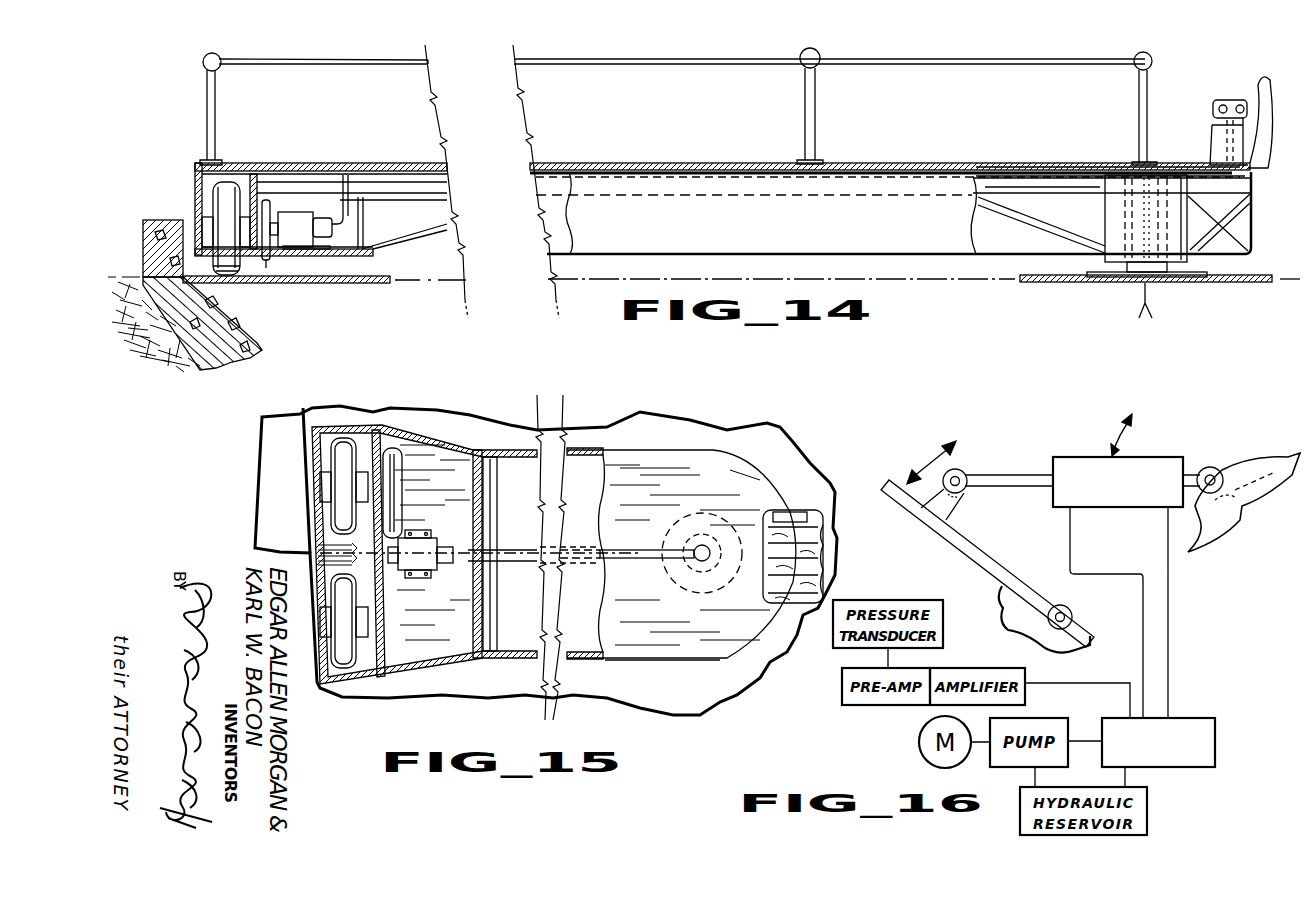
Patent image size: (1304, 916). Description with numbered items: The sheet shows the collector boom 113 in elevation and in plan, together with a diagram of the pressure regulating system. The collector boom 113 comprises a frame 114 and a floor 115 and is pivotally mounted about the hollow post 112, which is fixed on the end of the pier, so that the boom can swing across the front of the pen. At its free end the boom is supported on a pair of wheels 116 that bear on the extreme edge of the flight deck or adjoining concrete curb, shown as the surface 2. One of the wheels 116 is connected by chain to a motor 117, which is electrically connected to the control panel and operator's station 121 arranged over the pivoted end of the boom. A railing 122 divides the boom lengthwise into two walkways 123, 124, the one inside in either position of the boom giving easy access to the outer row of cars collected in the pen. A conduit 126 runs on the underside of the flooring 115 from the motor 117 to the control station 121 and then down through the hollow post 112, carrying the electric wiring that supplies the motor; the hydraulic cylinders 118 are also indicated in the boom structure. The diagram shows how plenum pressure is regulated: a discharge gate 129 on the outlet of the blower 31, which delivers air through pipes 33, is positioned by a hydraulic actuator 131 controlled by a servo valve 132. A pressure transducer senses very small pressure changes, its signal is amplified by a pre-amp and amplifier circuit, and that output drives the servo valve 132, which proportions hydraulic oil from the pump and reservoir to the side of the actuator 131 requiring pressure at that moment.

In FIG. 14, the floor / ground surface 2 is at (318, 284).
In FIG. 16, the blower 31 is at (1242, 474).
In FIG. 16, the pipes 33 is at (1020, 617).
In FIG. 14, the hollow post 112 is at (1133, 268).
In FIG. 15, the hollow post 112 is at (673, 575).
In FIG. 14, the collector boom 113 is at (690, 152).
In FIG. 15, the collector boom 113 is at (576, 412).
In FIG. 14, the frame 114 is at (1010, 187).
In FIG. 15, the frame 114 is at (486, 493).
In FIG. 14, the floor 115 is at (1010, 165).
In FIG. 14, the wheels 116 is at (226, 190).
In FIG. 15, the wheels 116 is at (345, 655).
In FIG. 14, the motor 117 is at (305, 218).
In FIG. 15, the motor 117 is at (418, 535).
In FIG. 14, the hydraulic cylinders 118 is at (1063, 180).
In FIG. 14, the control panel and operator's station 121 is at (1245, 102).
In FIG. 15, the control panel and operator's station 121 is at (768, 538).
In FIG. 14, the railing 122 is at (280, 63).
In FIG. 15, the railing 122 is at (622, 550).
In FIG. 15, the walkway 123 is at (631, 642).
In FIG. 15, the walkway 124 is at (662, 457).
In FIG. 14, the conduit 126 is at (349, 187).
In FIG. 16, the gate 129 is at (975, 556).
In FIG. 16, the hydraulic actuator 131 is at (1155, 459).
In FIG. 16, the servo valve 132 is at (1190, 712).